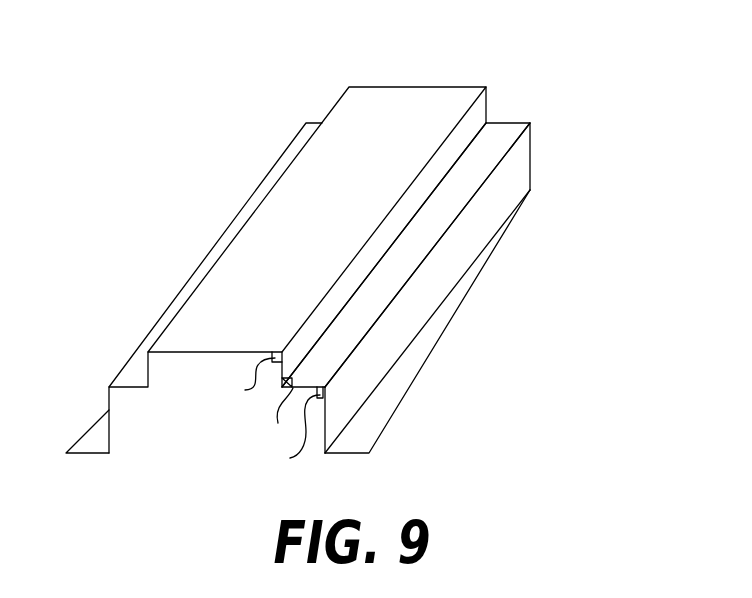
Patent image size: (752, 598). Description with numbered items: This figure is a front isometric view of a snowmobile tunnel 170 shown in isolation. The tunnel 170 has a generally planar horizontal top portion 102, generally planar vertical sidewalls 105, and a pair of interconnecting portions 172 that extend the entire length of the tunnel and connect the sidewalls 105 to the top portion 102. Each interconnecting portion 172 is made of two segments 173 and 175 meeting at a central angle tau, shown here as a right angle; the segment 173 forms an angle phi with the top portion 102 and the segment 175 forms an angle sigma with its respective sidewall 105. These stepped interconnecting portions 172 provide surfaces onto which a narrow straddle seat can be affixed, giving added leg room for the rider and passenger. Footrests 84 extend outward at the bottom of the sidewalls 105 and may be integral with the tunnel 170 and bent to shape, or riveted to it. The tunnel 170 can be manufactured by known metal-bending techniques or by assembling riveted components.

The footrests 84 is at (88, 440).
The top portion 102 is at (403, 97).
The sidewalls 105 is at (520, 163).
The tunnel 170 is at (350, 238).
The interconnecting portions 172 is at (153, 303).
The segment 173 is at (385, 237).
The segment 175 is at (392, 265).